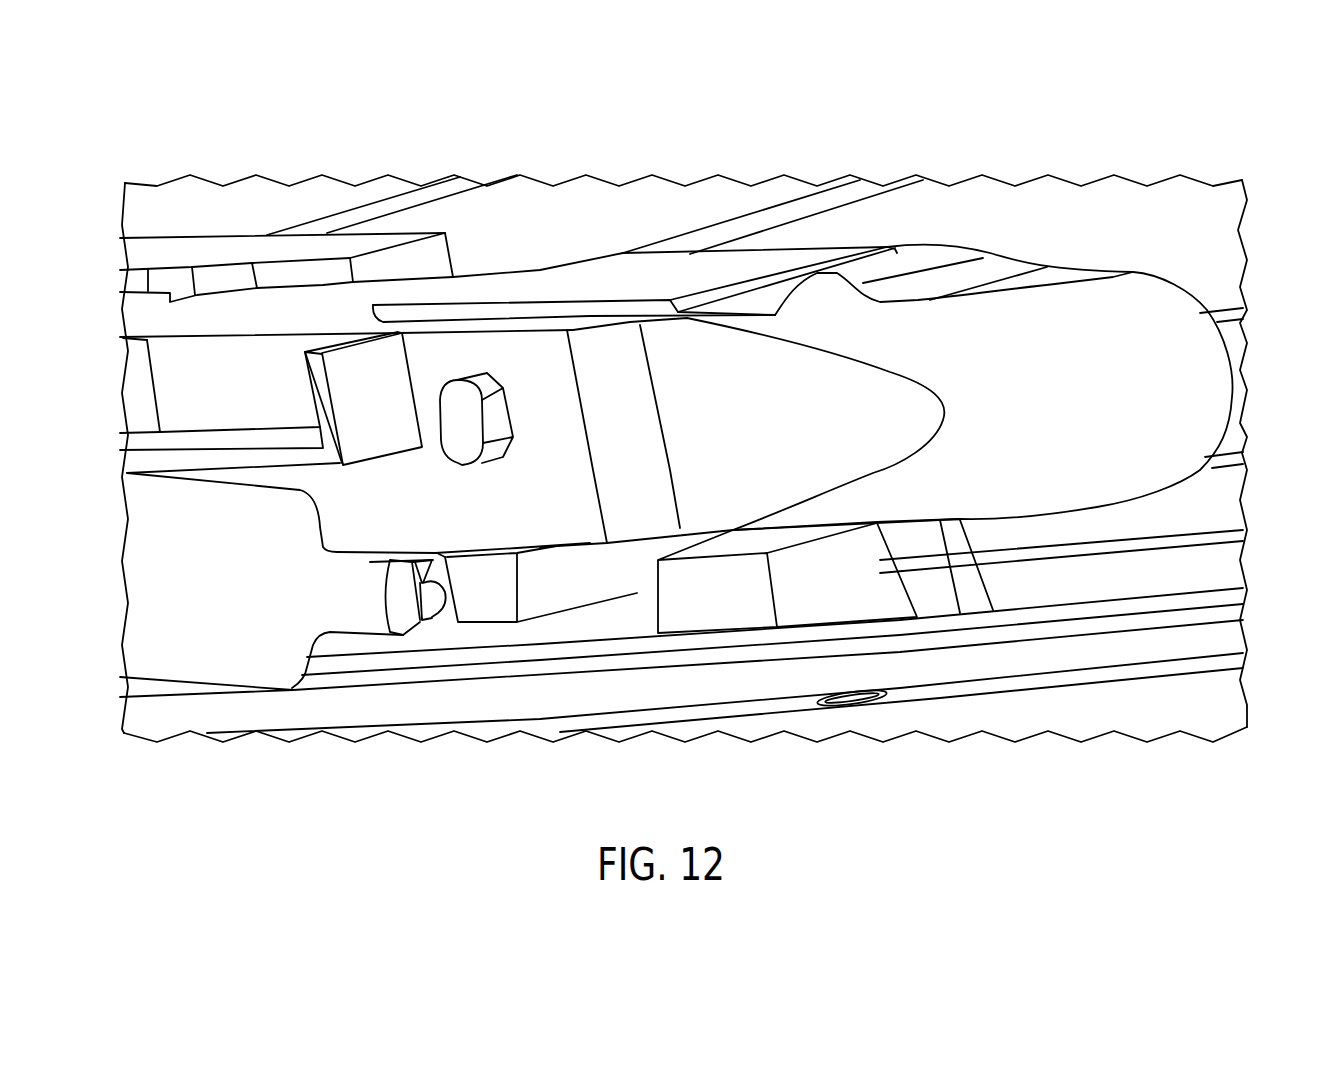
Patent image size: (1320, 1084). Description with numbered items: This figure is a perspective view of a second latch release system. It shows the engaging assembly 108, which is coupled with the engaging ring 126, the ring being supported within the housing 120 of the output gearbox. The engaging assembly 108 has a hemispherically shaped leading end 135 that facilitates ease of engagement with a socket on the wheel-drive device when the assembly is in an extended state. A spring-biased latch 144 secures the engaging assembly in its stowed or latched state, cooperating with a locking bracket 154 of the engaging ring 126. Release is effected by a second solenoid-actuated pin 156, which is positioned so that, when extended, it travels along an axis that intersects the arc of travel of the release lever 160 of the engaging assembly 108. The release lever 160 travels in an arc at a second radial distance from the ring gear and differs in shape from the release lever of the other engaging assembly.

The engaging assembly 108 is at (1013, 267).
The leading end 135 is at (1208, 340).
The engaging ring 126 is at (1233, 635).
The housing 120 is at (1203, 720).
The locking bracket 154 is at (433, 610).
The spring-biased latch 144 is at (573, 595).
The second solenoid-actuated pin 156 is at (245, 668).
The release lever 160 is at (437, 570).